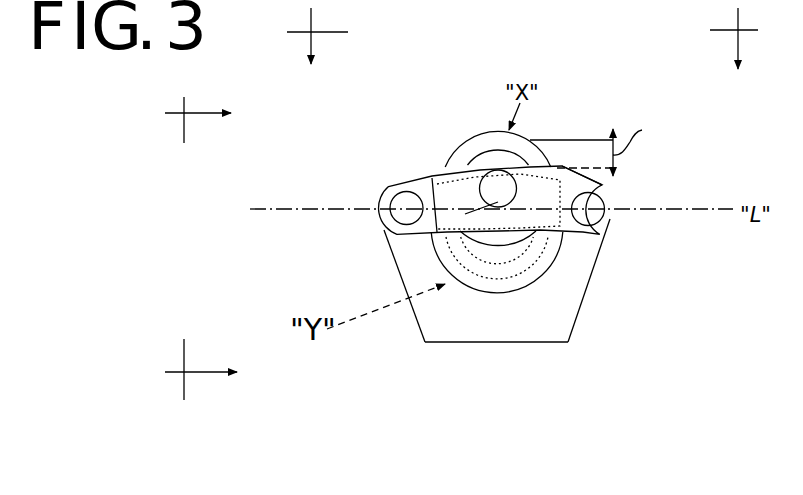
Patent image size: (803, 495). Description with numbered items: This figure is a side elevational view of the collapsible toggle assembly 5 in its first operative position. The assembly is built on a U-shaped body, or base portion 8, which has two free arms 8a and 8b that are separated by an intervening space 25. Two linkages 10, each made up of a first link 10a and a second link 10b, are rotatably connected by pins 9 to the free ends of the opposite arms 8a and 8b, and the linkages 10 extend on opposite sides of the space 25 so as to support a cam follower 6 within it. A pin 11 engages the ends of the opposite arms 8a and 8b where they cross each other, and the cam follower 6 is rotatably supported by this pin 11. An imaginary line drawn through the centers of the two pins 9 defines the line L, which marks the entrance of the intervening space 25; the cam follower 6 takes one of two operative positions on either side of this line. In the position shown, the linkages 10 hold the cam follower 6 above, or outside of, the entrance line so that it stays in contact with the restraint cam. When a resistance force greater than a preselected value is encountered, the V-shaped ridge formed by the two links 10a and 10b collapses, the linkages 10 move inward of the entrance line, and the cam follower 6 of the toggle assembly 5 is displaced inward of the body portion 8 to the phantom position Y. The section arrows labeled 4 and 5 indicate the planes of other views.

The section line 4- 4 is at (523, 40).
The collapsible toggle assembly 5 is at (560, 402).
The cam follower 6 is at (528, 142).
The base portion 8 is at (505, 320).
The free arm 8a is at (577, 260).
The free arm 8b is at (400, 268).
The pins 9 is at (399, 207).
The linkages 10 is at (375, 224).
The first link 10a is at (557, 193).
The second link 10b is at (470, 214).
The pin 11 is at (493, 186).
The intervening space 25 is at (474, 285).